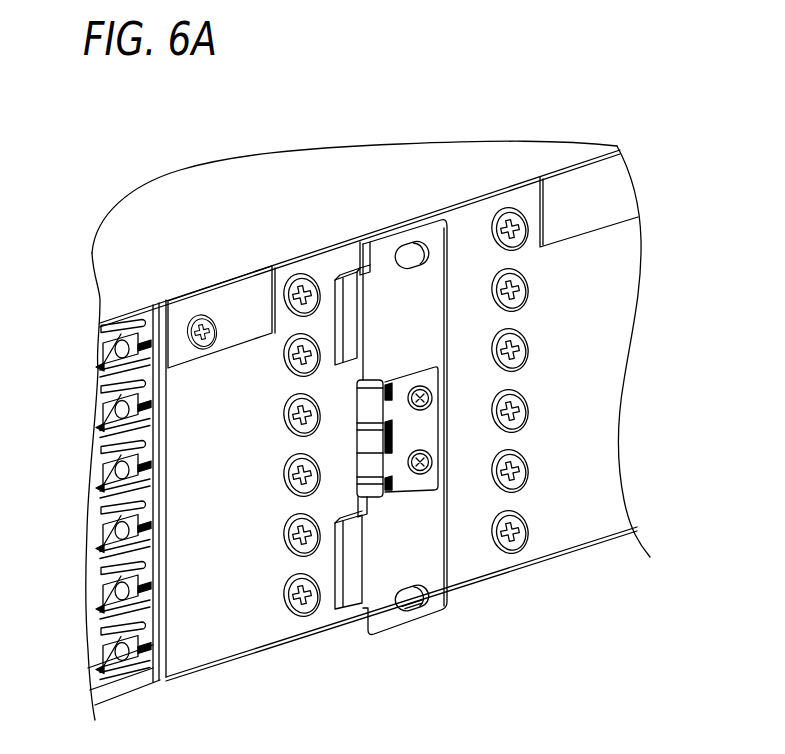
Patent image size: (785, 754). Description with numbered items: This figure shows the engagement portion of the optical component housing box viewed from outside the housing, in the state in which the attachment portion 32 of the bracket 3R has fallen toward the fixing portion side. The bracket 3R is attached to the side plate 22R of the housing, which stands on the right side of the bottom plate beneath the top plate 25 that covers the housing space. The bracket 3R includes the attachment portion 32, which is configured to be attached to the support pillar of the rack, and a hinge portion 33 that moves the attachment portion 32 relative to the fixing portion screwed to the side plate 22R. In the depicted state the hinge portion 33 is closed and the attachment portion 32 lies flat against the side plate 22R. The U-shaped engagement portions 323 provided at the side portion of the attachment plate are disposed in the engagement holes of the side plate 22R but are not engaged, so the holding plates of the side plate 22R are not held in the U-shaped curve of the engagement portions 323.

The top plate 25 is at (369, 178).
The side plate 22R is at (587, 335).
The bracket 3R is at (389, 447).
The attachment portion 32 is at (434, 609).
The hinge portion 33 is at (367, 440).
The engagement portion 323 is at (353, 305).